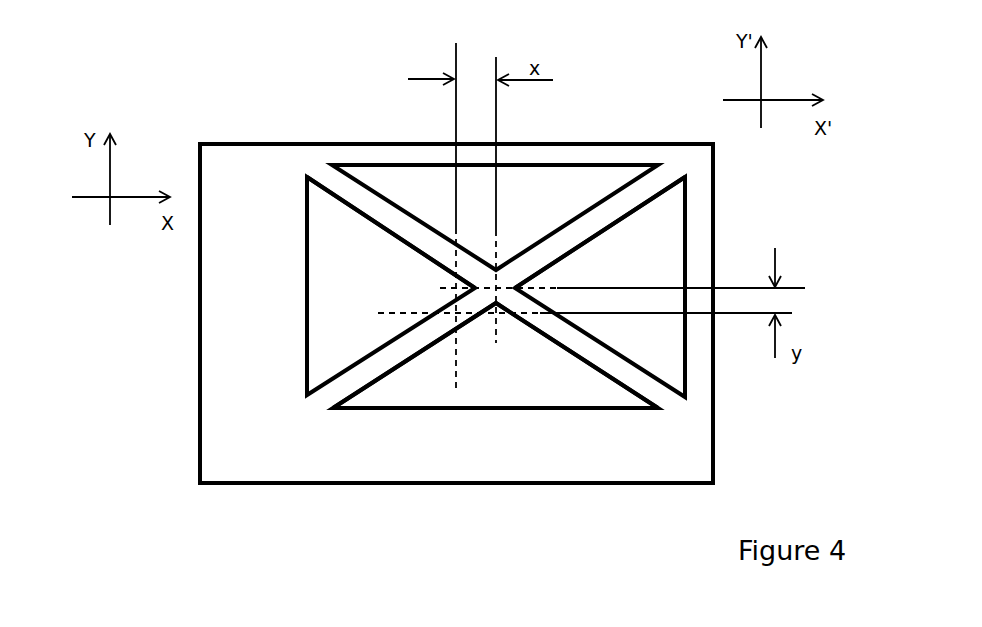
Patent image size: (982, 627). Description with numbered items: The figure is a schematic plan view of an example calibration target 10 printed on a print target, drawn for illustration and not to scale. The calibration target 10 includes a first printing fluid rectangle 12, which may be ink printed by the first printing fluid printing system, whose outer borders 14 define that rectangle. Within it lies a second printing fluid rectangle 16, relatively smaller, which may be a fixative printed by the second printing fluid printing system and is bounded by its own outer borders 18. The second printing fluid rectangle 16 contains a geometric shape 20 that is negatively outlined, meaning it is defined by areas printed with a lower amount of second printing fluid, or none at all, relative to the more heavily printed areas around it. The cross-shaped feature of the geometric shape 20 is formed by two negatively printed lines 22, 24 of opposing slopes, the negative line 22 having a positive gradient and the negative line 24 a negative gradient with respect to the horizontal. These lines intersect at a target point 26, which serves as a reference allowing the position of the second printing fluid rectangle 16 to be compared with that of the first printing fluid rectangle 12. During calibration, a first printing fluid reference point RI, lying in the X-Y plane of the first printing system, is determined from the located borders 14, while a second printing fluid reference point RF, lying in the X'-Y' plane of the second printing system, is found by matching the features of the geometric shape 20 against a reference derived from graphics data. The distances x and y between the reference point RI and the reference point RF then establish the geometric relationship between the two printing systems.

The calibration target 10 is at (277, 486).
The first printing fluid figure 12 is at (695, 228).
The outer borders 14 is at (197, 325).
The second printing fluid figure 16 is at (400, 393).
The outer borders 18 is at (626, 415).
The geometric figure 20 is at (365, 200).
The negatively printed line 22 is at (345, 385).
The negatively printed line 24 is at (643, 383).
The target point 26 is at (515, 271).
The second printing fluid reference point RF is at (484, 280).
The first printing fluid reference point RI is at (465, 317).